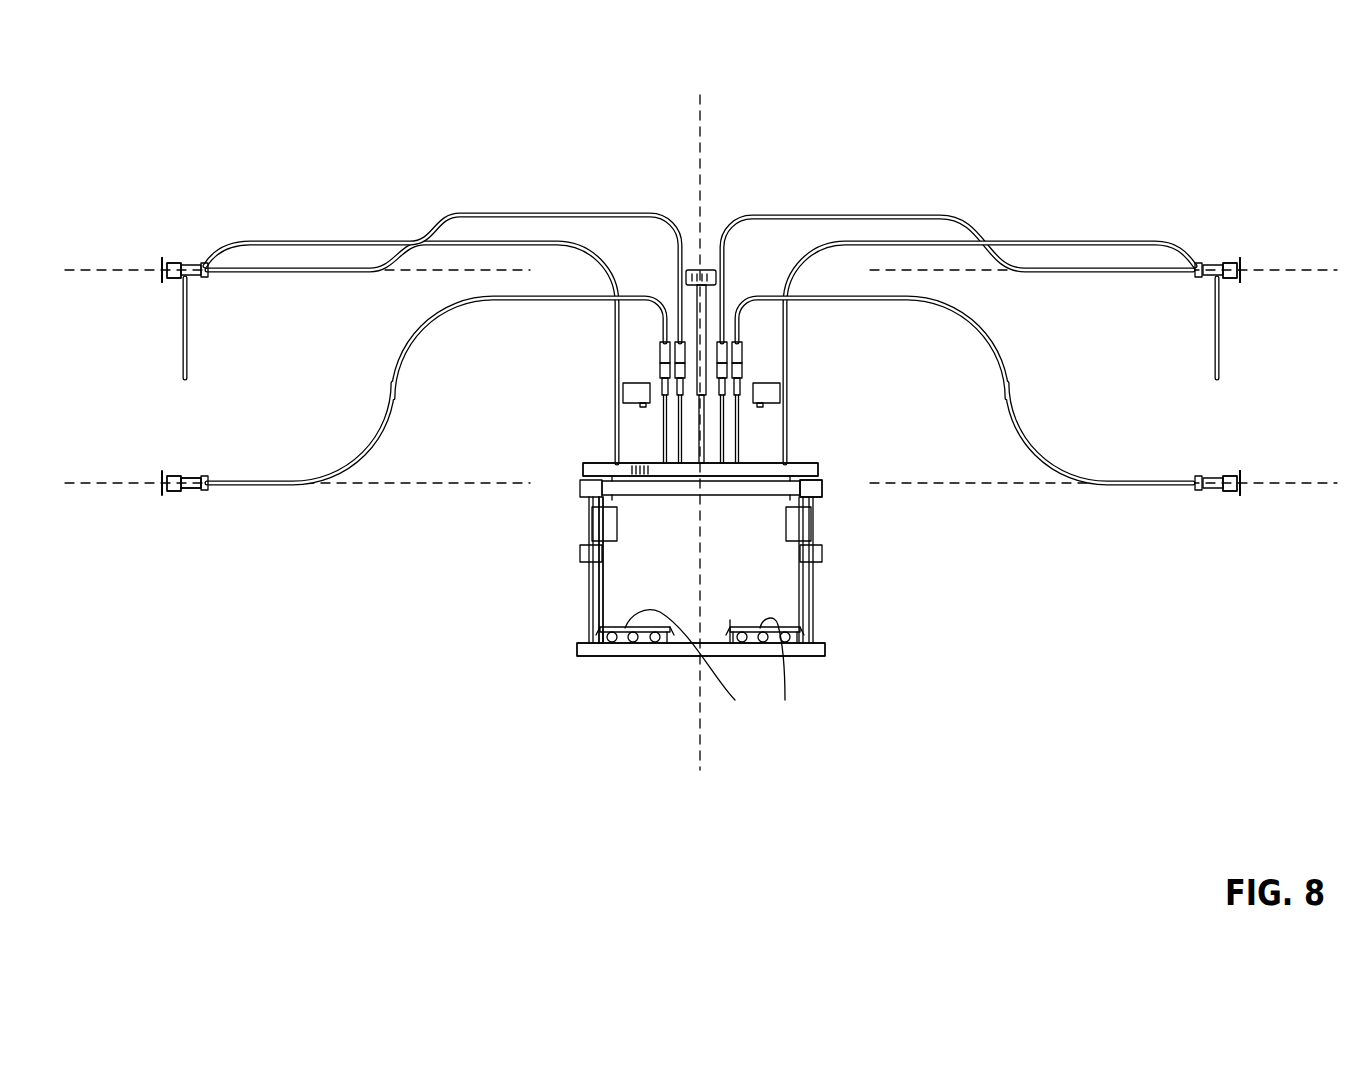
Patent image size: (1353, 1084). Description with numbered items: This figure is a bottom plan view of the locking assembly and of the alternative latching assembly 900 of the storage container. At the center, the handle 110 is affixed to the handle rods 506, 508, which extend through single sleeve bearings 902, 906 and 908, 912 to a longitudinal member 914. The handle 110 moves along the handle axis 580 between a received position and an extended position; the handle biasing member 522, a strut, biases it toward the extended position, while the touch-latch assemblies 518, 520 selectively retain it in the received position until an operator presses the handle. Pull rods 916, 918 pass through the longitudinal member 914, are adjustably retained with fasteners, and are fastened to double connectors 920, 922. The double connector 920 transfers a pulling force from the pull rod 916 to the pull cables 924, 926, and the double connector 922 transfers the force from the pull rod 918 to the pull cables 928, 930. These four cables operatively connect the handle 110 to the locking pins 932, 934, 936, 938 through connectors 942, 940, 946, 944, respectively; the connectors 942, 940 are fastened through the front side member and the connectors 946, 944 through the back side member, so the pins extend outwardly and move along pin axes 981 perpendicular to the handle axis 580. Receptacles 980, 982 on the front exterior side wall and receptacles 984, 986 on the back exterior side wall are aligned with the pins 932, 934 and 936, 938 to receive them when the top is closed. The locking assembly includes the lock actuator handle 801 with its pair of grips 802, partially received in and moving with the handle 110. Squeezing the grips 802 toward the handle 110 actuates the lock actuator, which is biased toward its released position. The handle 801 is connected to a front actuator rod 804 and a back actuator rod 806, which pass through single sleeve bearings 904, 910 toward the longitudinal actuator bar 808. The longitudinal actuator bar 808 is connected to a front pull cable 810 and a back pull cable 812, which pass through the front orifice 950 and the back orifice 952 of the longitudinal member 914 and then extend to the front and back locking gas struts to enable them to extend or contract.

The handle 110 is at (602, 657).
The handle rod 506 is at (815, 603).
The handle rod 508 is at (590, 590).
The touch-latch assembly 518 is at (781, 396).
The touch-latch assembly 520 is at (630, 423).
The handle biasing member 522 is at (697, 310).
The handle axis 580 is at (697, 148).
The handle 801 is at (735, 598).
The grips 802 is at (785, 700).
The front actuator rod 804 is at (815, 624).
The back actuator rod 806 is at (602, 603).
The longitudinal actuator bar 808 is at (672, 500).
The front pull cable 810 is at (1045, 243).
The back pull cable 812 is at (295, 243).
The latching assembly 900 is at (878, 544).
The single sleeve bearing 902 is at (818, 558).
The single sleeve bearing 904 is at (787, 533).
The single sleeve bearing 906 is at (818, 492).
The single sleeve bearing 908 is at (580, 553).
The single sleeve bearing 910 is at (617, 533).
The single sleeve bearing 912 is at (580, 490).
The longitudinal member 914 is at (820, 483).
The pull rod 916 is at (735, 440).
The pull rod 918 is at (672, 446).
The double connector 920 is at (776, 356).
The double connector 922 is at (636, 360).
The pull cable 924 is at (1060, 470).
The pull cable 926 is at (940, 222).
The pull cable 928 is at (347, 470).
The pull cable 930 is at (408, 230).
The locking pin 932 is at (1237, 470).
The locking pin 934 is at (1240, 285).
The locking pin 936 is at (165, 495).
The locking pin 938 is at (163, 258).
The connector 940 is at (1207, 250).
The connector 942 is at (1210, 468).
The connector 944 is at (200, 250).
The connector 946 is at (196, 508).
The front orifice 950 is at (788, 468).
The back orifice 952 is at (618, 474).
The receptacle 980 is at (1240, 495).
The pin axes 981 is at (70, 270).
The receptacle 982 is at (1238, 258).
The receptacle 984 is at (162, 495).
The receptacle 986 is at (162, 285).